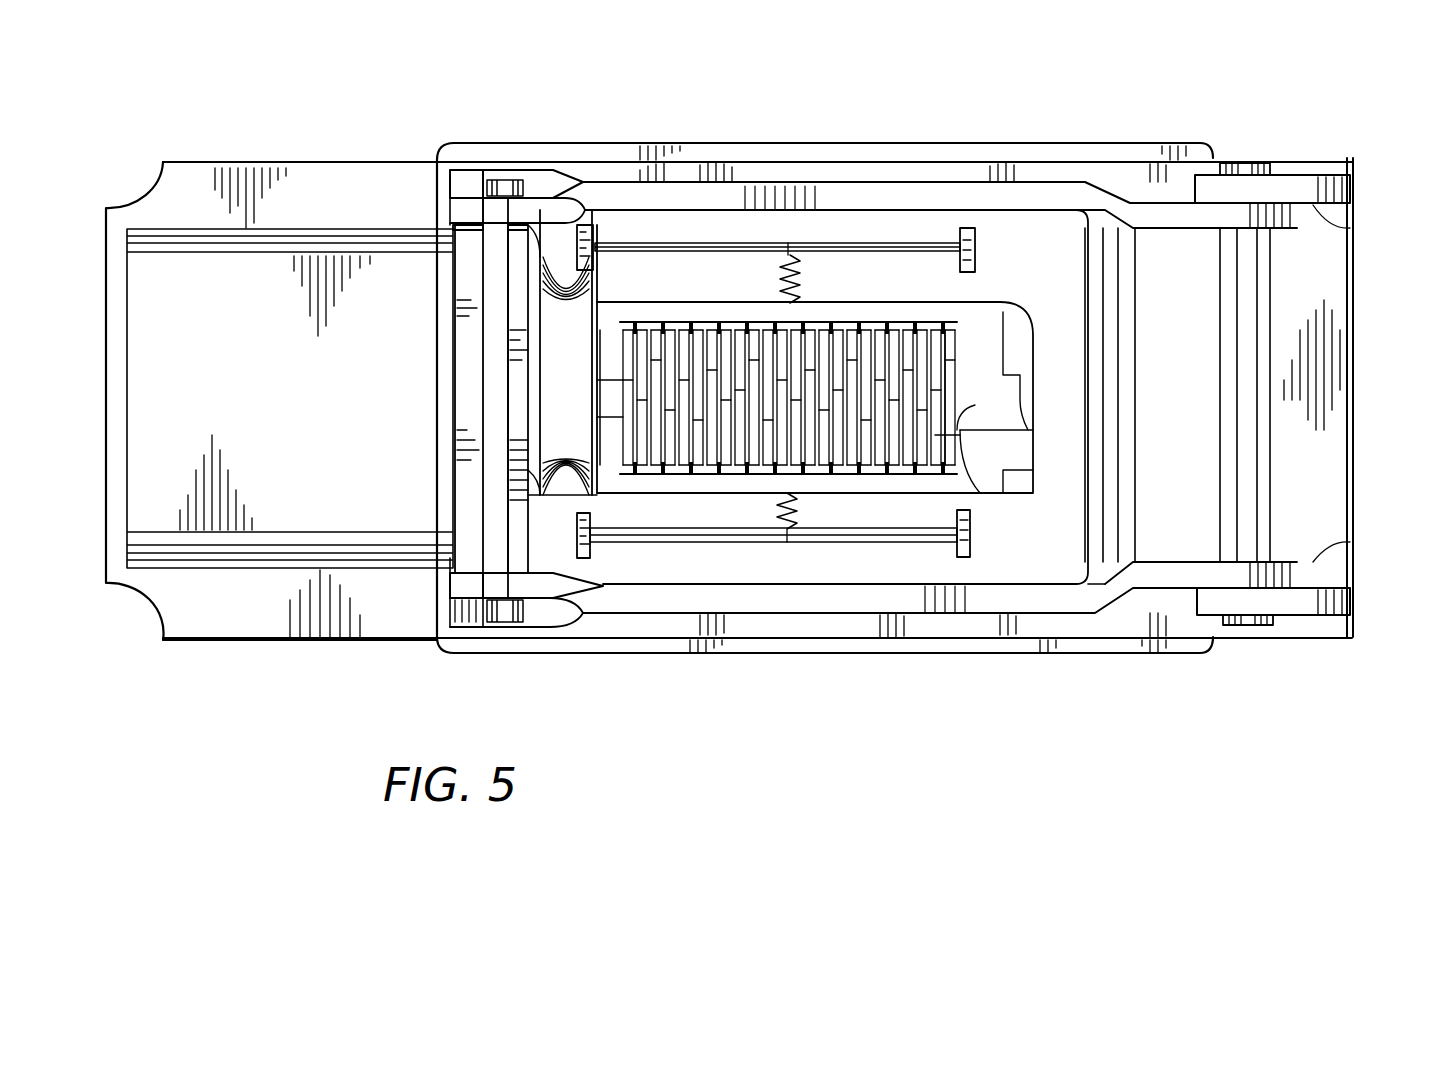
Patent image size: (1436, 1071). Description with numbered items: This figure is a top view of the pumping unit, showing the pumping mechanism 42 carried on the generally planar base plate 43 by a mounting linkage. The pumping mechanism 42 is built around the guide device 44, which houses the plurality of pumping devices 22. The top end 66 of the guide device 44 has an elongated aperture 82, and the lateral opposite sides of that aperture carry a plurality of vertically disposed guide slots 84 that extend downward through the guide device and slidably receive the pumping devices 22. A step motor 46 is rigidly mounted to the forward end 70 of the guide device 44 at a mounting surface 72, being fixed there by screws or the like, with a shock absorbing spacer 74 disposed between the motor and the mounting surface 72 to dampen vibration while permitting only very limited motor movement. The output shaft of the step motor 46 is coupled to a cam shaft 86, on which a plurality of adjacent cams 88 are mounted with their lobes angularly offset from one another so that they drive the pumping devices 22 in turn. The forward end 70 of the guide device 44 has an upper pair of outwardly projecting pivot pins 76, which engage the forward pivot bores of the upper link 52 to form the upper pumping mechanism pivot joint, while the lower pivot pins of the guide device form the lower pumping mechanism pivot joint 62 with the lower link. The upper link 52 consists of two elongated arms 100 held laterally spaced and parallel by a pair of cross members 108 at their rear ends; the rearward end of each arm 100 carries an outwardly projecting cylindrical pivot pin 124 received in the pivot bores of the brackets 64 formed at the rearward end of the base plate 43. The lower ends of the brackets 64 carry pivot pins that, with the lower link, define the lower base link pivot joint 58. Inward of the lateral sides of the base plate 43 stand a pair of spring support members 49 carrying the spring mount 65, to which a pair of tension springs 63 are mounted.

The pumping devices 22 is at (935, 432).
The pumping mechanism 42 is at (406, 212).
The base plate 43 is at (281, 612).
The guide device 44 is at (939, 280).
The step motor 46 is at (306, 226).
The spring support members 49 is at (590, 225).
The upper link 52 is at (850, 168).
The lower base link pivot joint 58 is at (1232, 150).
The lower pumping mechanism pivot joint 62 is at (548, 180).
The tension springs 63 is at (795, 250).
The brackets 64 is at (1325, 210).
The spring mount 65 is at (700, 242).
The top end of guide device 66 is at (990, 300).
The forward end of guide device 70 is at (552, 350).
The mounting surface 72 is at (512, 417).
The shock absorbing spacer 74 is at (455, 372).
The upper pivot pins 76 is at (500, 180).
The elongated aperture 82 is at (978, 455).
The guide slots 84 is at (705, 322).
The cam shaft 86 is at (612, 447).
The cams 88 is at (910, 352).
The arms 100 is at (746, 186).
The cross members 108 is at (1150, 398).
The pivot pins 124 is at (1268, 162).